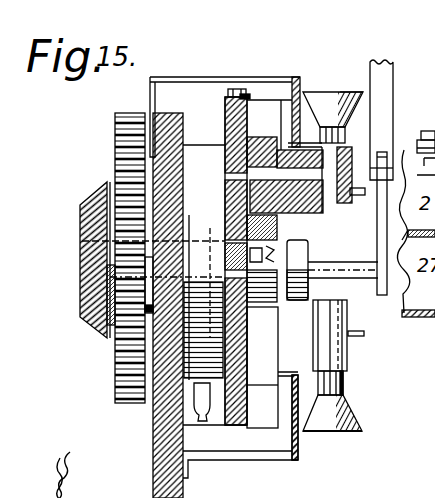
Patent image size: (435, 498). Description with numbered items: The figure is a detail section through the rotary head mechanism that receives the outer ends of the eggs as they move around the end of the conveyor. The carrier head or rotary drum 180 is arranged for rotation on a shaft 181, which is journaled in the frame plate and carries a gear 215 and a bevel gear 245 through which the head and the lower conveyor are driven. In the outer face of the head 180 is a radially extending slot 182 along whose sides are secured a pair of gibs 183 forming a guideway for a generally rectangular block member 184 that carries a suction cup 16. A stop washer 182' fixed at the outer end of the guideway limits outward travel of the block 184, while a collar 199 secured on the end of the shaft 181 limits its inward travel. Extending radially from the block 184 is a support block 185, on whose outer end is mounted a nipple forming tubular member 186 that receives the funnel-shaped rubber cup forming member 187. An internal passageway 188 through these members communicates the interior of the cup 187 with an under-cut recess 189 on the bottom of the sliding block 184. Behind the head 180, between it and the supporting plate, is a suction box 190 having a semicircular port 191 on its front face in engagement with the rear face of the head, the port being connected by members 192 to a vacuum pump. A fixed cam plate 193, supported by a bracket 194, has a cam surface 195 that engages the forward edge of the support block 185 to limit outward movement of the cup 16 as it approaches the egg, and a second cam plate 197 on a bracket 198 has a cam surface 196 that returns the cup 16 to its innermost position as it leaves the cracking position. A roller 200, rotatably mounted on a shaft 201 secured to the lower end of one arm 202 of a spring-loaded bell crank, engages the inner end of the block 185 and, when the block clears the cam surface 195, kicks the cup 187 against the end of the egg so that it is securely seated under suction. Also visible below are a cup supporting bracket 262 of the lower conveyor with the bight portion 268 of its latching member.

The suction cup 16 is at (330, 96).
The carrier head 180 is at (226, 103).
The shaft 181 is at (100, 331).
The radially extending slot 182 is at (243, 74).
The stop washer 182' is at (233, 59).
The gib 183 is at (298, 142).
The block member 184 is at (265, 137).
The support block 185 is at (297, 199).
The tubular member 186 is at (352, 196).
The cup forming member 187 is at (358, 101).
The internal passageway 188 is at (362, 195).
The under-cut recess 189 is at (231, 146).
The suction box 190 is at (198, 182).
The semicircular port 191 is at (208, 231).
The connecting members 192 is at (212, 421).
The fixed cam plate 193 is at (282, 133).
The bracket 194 is at (170, 76).
The cam surface 195 is at (343, 136).
The cam surface 196 is at (294, 372).
The cam plate 197 is at (343, 391).
The bracket 198 is at (228, 458).
The collar 199 is at (262, 302).
The roller 200 is at (308, 292).
The shaft 201 is at (392, 79).
The bell crank arm 202 is at (380, 295).
The gear 215 is at (115, 351).
The bevel gear 245 is at (80, 241).
The cup supporting bracket 262 is at (340, 497).
The bight portion 268 is at (374, 497).